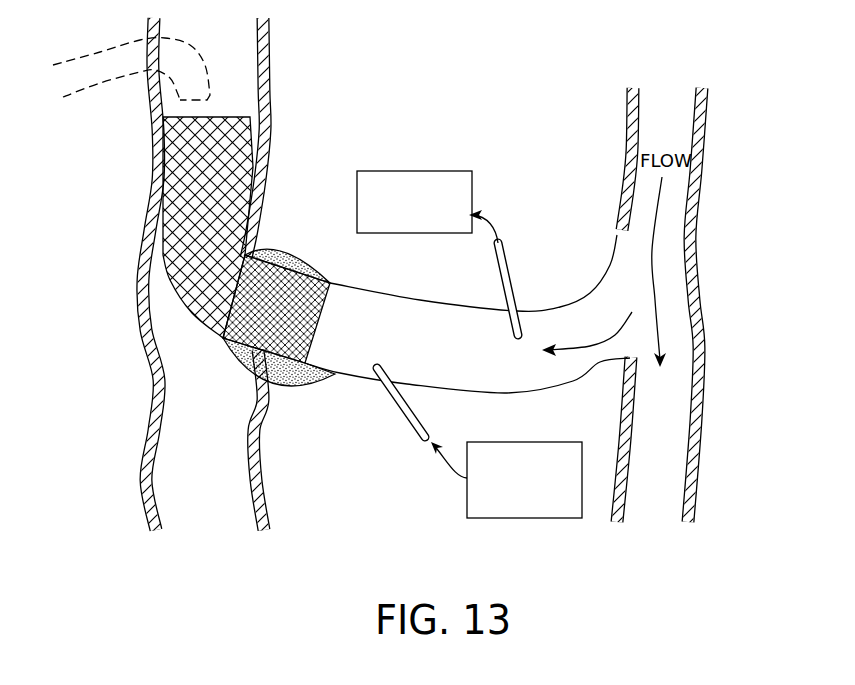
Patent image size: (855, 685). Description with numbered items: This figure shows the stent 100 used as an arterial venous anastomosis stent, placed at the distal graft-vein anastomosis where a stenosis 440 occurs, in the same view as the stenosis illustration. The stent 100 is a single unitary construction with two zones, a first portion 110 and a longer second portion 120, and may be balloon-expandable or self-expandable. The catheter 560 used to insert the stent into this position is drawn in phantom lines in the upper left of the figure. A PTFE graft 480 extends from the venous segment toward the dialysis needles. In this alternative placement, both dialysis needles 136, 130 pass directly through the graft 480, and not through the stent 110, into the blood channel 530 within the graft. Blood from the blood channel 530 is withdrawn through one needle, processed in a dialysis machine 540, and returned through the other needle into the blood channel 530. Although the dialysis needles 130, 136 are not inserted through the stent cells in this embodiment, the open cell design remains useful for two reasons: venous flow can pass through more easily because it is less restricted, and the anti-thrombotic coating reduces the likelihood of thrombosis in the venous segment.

The stent 100 is at (240, 137).
The first portion 110 is at (307, 368).
The second portion 120 is at (178, 199).
The first dialysis needle 130 is at (403, 418).
The second dialysis needle 136 is at (510, 263).
The stenosis 440 is at (287, 257).
The graft 480 is at (427, 302).
The blood channel 530 is at (580, 350).
The dialysis machine 540 is at (430, 170).
The catheter 560 is at (98, 85).